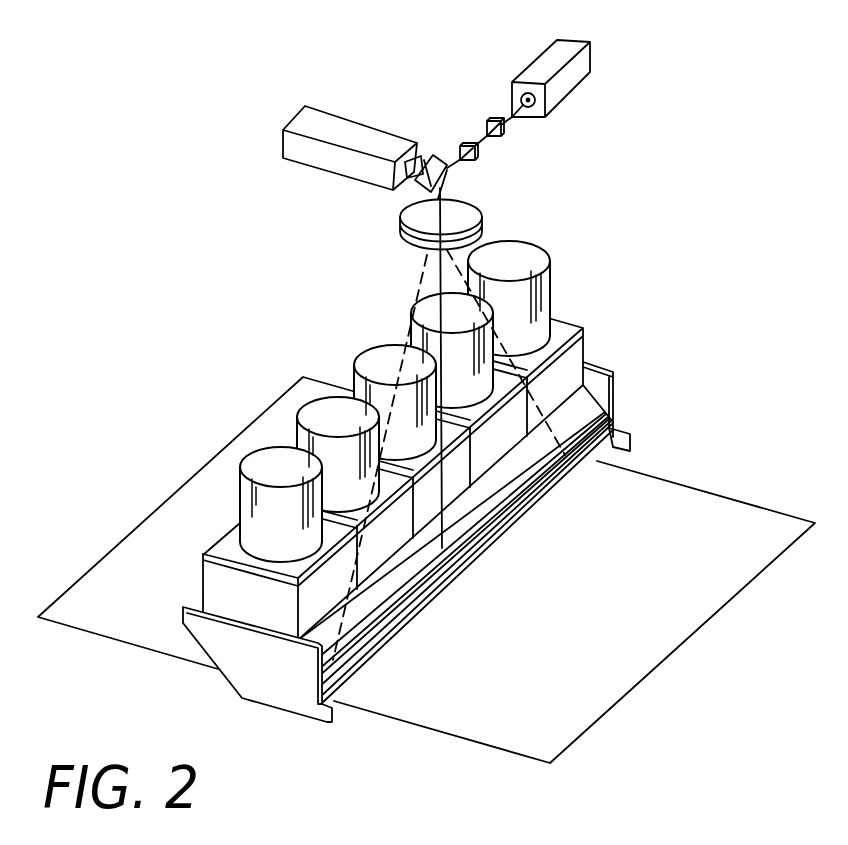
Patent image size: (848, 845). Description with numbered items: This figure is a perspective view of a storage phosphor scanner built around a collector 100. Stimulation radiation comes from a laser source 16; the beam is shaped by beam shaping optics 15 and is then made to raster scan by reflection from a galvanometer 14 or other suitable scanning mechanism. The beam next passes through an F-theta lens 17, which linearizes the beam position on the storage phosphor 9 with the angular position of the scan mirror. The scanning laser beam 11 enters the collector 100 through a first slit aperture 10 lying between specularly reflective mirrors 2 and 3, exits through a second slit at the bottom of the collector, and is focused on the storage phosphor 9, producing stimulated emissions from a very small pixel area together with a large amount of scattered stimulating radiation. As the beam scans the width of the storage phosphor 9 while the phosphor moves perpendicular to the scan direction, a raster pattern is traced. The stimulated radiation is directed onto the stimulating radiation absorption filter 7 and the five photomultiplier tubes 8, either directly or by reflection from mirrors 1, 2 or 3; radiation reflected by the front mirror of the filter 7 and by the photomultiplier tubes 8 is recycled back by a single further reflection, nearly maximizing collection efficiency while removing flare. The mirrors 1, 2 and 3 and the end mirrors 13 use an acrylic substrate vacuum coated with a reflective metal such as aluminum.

The mirror 1 is at (388, 642).
The mirror 2 is at (423, 597).
The mirror 3 is at (513, 477).
The stimulating radiation absorption filter 7 is at (218, 580).
The photomultiplier tubes 8 is at (551, 278).
The storage phosphor 9 is at (707, 587).
The first slit aperture 10 is at (497, 512).
The scanning laser beam 11 is at (447, 548).
The end mirrors 13 is at (237, 661).
The galvanometer 14 is at (356, 140).
The beam shaping optics 15 is at (501, 137).
The laser source 16 is at (581, 68).
The F-theta lens 17 is at (402, 229).
The collector 100 is at (643, 412).